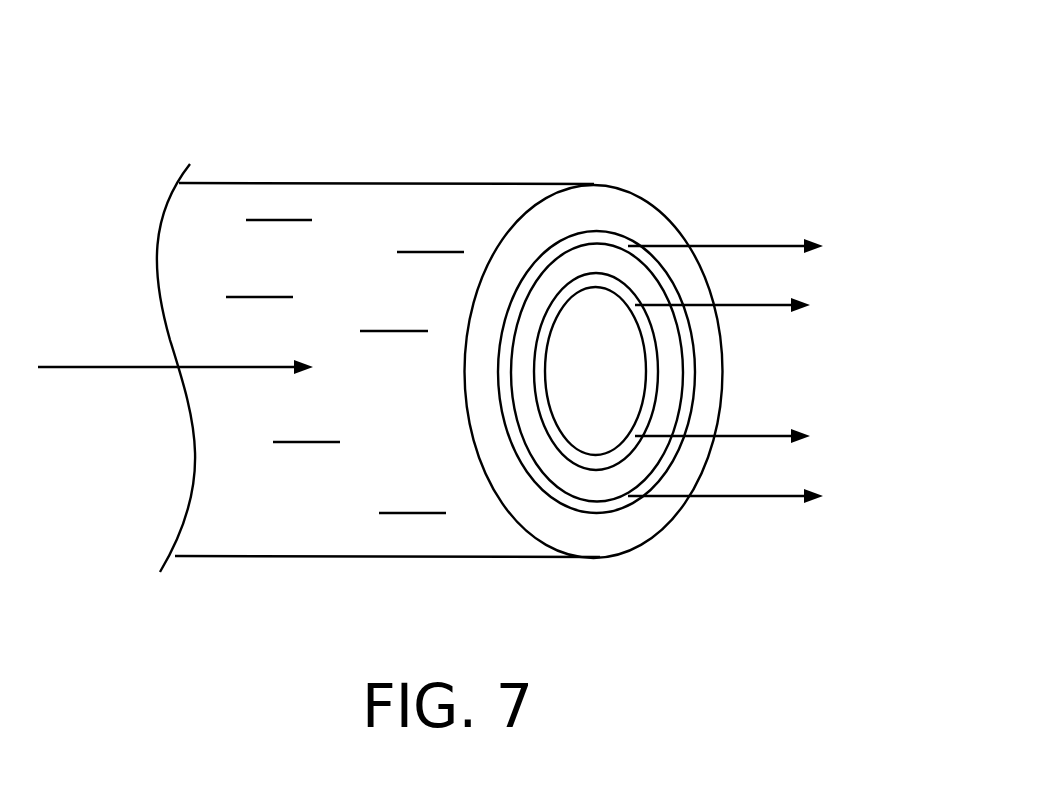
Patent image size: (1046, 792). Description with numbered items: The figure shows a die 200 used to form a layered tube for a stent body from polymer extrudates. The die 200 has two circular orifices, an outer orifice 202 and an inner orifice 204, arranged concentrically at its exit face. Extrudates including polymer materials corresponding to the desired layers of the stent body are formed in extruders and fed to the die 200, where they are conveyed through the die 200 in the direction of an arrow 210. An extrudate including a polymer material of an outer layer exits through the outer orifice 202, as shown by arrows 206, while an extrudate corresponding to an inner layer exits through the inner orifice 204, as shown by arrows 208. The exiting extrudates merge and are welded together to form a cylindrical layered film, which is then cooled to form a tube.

The die 200 is at (678, 105).
The outer orifice 202 is at (583, 243).
The inner orifice 204 is at (583, 453).
The arrows 206 is at (758, 246).
The arrows 208 is at (759, 306).
The arrow 210 is at (97, 367).